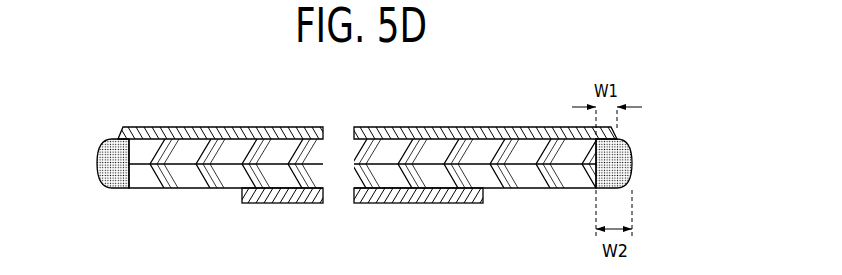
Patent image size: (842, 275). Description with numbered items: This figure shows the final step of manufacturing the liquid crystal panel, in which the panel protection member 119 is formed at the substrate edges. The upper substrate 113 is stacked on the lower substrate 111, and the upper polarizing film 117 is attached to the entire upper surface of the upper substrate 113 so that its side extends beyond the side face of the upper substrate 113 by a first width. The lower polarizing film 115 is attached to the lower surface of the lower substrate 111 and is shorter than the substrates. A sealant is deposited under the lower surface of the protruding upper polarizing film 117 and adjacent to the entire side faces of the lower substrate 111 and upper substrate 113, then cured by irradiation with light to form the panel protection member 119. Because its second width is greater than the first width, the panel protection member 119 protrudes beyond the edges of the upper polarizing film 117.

The lower substrate 111 is at (130, 184).
The upper substrate 113 is at (138, 148).
The lower polarizing film 115 is at (243, 197).
The upper polarizing film 117 is at (118, 135).
The panel protection member 119 is at (632, 165).